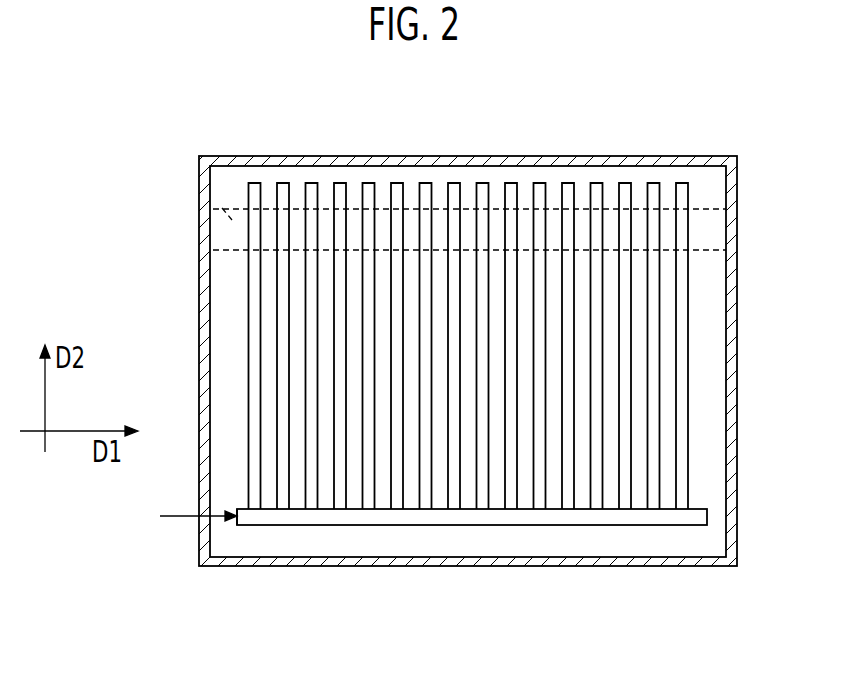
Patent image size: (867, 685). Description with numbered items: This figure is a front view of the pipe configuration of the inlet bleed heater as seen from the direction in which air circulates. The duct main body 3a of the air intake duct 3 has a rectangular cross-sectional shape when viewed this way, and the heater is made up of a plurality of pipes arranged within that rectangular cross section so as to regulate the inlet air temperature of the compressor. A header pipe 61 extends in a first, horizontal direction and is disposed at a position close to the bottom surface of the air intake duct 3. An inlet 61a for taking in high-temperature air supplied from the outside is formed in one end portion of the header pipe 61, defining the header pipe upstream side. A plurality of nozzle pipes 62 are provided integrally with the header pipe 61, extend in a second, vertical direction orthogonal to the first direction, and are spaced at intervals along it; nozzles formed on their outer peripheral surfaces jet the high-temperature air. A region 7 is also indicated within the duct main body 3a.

The air intake duct 3 is at (189, 136).
The duct main body 3a is at (199, 291).
The semiconductor module mounting region 7 is at (200, 197).
The nozzle pipe 62 is at (688, 277).
The header pipe 61 is at (398, 518).
The inlet 61a is at (238, 521).